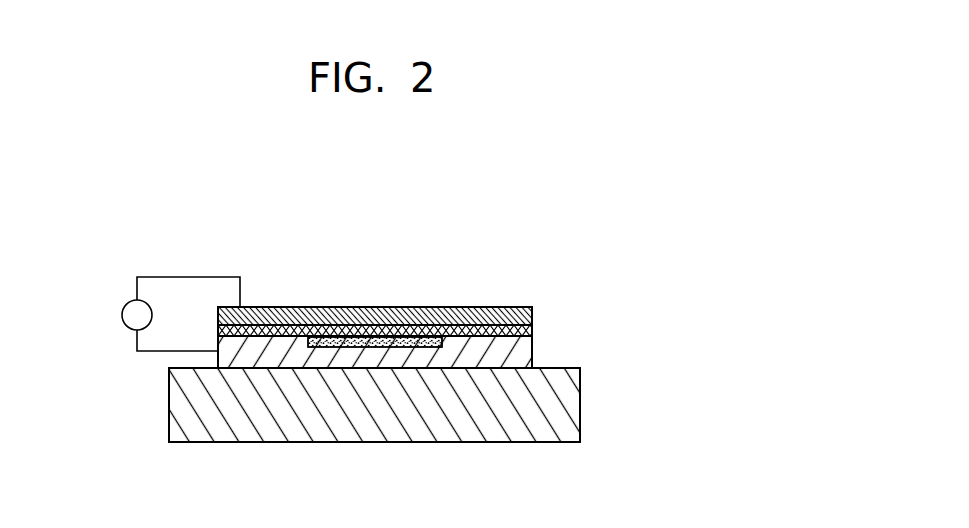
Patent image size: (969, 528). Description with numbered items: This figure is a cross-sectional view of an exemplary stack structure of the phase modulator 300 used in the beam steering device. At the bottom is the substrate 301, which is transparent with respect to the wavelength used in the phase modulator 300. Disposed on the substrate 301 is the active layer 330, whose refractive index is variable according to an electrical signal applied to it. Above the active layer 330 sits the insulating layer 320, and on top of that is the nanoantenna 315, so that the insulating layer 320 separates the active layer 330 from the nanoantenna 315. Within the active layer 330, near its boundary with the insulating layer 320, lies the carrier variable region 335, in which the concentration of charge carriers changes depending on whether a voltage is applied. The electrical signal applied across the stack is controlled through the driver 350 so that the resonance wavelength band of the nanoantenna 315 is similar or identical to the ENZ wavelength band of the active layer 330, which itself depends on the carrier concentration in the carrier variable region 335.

The phase modulator 300 is at (539, 252).
The substrate 301 is at (570, 405).
The nanoantenna 315 is at (528, 313).
The insulating layer 320 is at (530, 330).
The active layer 330 is at (527, 350).
The carrier variable region 335 is at (375, 337).
The driver 350 is at (121, 315).